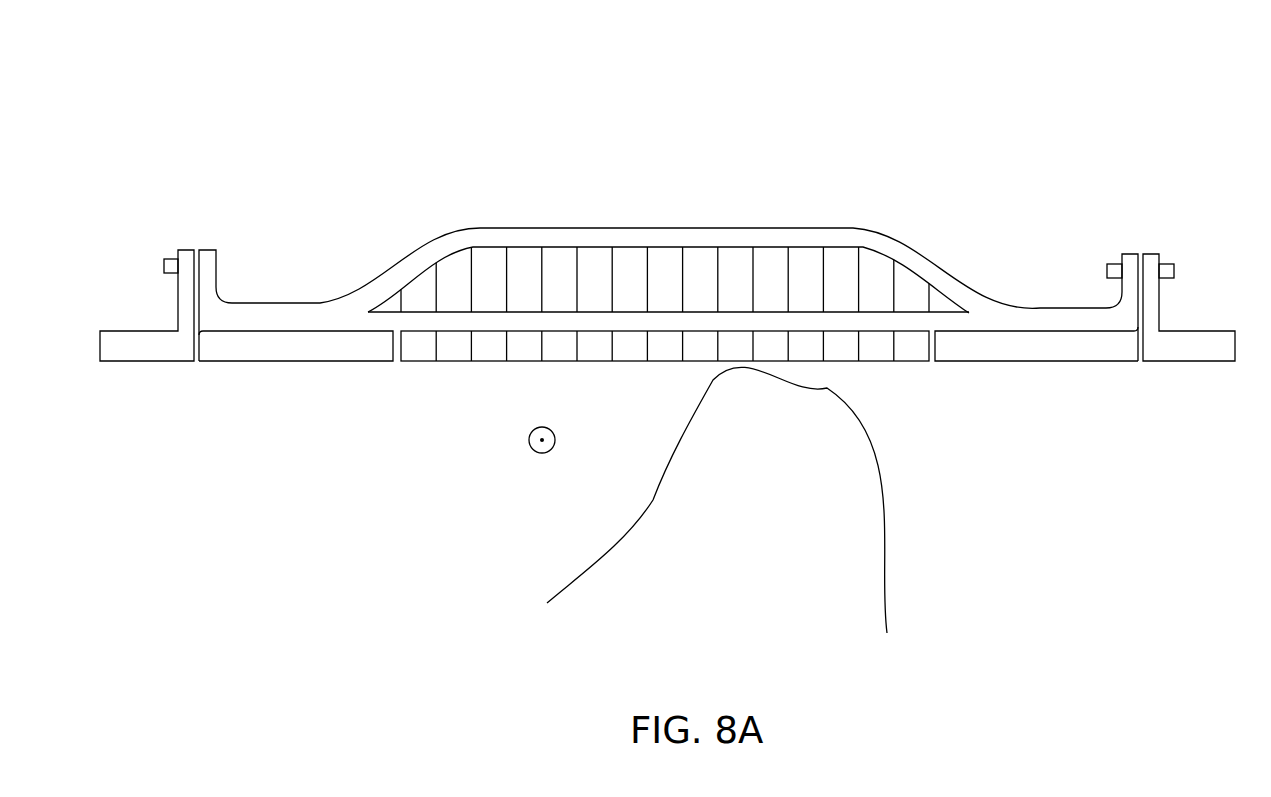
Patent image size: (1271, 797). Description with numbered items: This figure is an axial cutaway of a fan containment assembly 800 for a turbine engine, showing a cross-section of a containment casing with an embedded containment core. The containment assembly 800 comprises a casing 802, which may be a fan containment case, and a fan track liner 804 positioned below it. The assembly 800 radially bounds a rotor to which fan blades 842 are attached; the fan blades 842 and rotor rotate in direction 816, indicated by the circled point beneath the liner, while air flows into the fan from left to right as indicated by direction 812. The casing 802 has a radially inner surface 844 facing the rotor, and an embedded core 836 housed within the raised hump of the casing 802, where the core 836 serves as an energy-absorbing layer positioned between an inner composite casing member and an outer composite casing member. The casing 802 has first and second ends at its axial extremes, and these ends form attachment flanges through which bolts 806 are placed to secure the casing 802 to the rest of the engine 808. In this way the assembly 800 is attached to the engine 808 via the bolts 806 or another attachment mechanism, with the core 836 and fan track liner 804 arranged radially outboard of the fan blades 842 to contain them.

The containment assembly 800 is at (1063, 93).
The casing 802 is at (924, 230).
The fan track liner 804 is at (683, 358).
The bolts 806 is at (1178, 272).
The engine 808 is at (121, 343).
The direction 812 is at (276, 521).
The direction 816 is at (527, 447).
The embedded core 836 is at (683, 294).
The fan blades 842 is at (793, 516).
The radially inner surface 844 is at (321, 333).